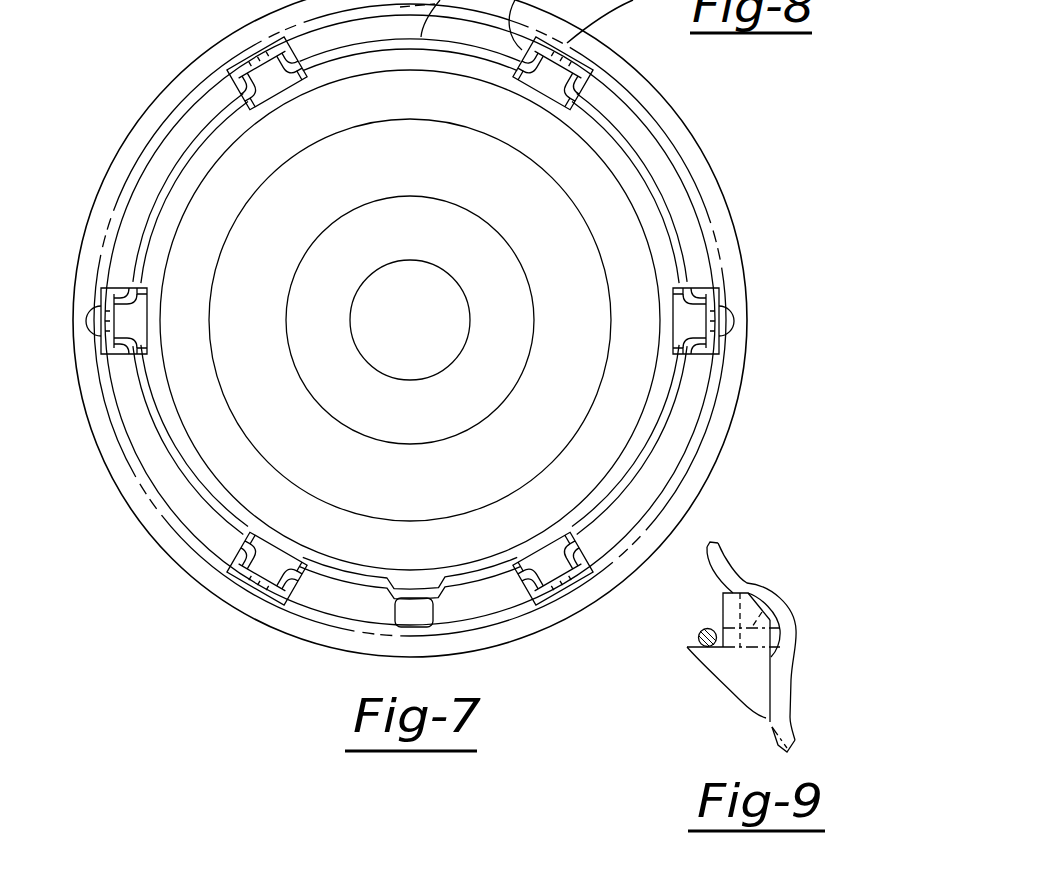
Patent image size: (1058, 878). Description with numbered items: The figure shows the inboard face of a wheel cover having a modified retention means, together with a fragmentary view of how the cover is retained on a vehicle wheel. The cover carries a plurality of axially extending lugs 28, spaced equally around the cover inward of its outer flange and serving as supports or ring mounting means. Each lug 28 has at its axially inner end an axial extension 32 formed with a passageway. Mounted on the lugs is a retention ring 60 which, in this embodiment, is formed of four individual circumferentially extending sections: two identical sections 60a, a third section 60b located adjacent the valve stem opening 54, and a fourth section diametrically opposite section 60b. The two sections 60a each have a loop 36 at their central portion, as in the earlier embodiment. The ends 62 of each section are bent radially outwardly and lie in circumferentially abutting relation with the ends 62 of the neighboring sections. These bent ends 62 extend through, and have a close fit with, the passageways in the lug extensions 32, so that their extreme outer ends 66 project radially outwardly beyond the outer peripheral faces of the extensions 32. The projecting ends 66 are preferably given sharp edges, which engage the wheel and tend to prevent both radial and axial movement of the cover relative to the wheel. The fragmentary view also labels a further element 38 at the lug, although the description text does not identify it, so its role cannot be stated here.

In FIG. 9, the lug 28 is at (745, 675).
In FIG. 9, the axial extension 32 is at (733, 593).
In FIG. 7, the loop 36 is at (97, 322).
In FIG. 7, the ring / seal ring 38 is at (183, 165).
In FIG. 9, the ring / seal ring 38 is at (700, 650).
In FIG. 7, the valve stem opening 54 is at (420, 615).
In FIG. 7, the retention ring 60 is at (683, 246).
In FIG. 7, the ring section 60a is at (147, 417).
In FIG. 7, the ring section 60b is at (365, 588).
In FIG. 7, the bent end 62 is at (587, 63).
In FIG. 9, the bent end 62 is at (730, 579).
In FIG. 7, the outer end 66 is at (262, 587).
In FIG. 9, the outer end 66 is at (781, 635).